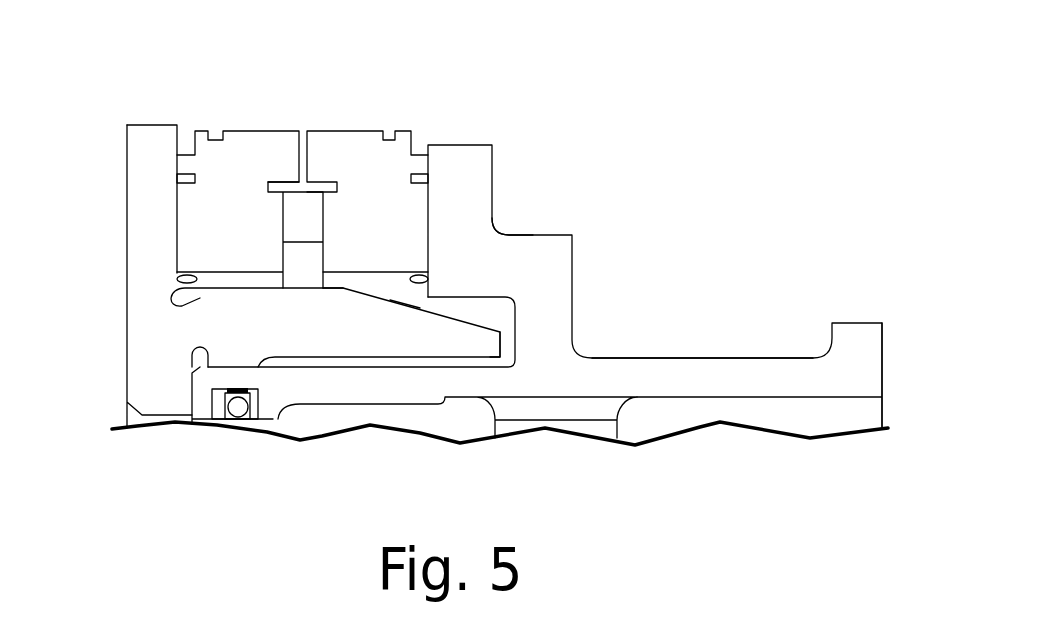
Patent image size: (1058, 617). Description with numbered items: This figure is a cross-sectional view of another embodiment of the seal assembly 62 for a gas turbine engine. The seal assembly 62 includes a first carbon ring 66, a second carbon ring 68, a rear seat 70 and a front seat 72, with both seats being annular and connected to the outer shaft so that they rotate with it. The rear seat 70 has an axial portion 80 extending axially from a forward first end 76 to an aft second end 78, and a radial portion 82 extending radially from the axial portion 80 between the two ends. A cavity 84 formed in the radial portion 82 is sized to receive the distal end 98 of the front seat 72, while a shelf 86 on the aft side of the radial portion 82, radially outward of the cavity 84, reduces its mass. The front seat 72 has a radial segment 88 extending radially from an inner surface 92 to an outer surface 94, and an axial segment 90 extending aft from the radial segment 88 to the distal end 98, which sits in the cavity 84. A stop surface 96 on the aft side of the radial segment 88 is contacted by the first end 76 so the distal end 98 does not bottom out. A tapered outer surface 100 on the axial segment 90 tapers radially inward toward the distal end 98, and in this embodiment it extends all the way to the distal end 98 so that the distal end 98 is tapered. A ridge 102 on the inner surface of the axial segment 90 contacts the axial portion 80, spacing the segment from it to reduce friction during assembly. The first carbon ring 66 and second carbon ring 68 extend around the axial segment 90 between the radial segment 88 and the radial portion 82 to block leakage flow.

The seal assembly 62 is at (572, 95).
The first carbon ring 66 is at (250, 131).
The second carbon ring 68 is at (343, 131).
The rear seat 70 is at (728, 358).
The front seat 72 is at (180, 330).
The first end 76 is at (200, 407).
The second end 78 is at (883, 362).
The axial portion 80 is at (717, 373).
The radial portion 82 is at (553, 265).
The cavity 84 is at (515, 325).
The shelf 86 is at (533, 232).
The radial segment 88 is at (145, 203).
The axial segment 90 is at (343, 337).
The inner surface 92 is at (155, 417).
The outer surface 94 is at (142, 126).
The stop surface 96 is at (187, 390).
The distal end 98 is at (485, 340).
The tapered outer surface 100 is at (405, 310).
The ridge 102 is at (233, 353).